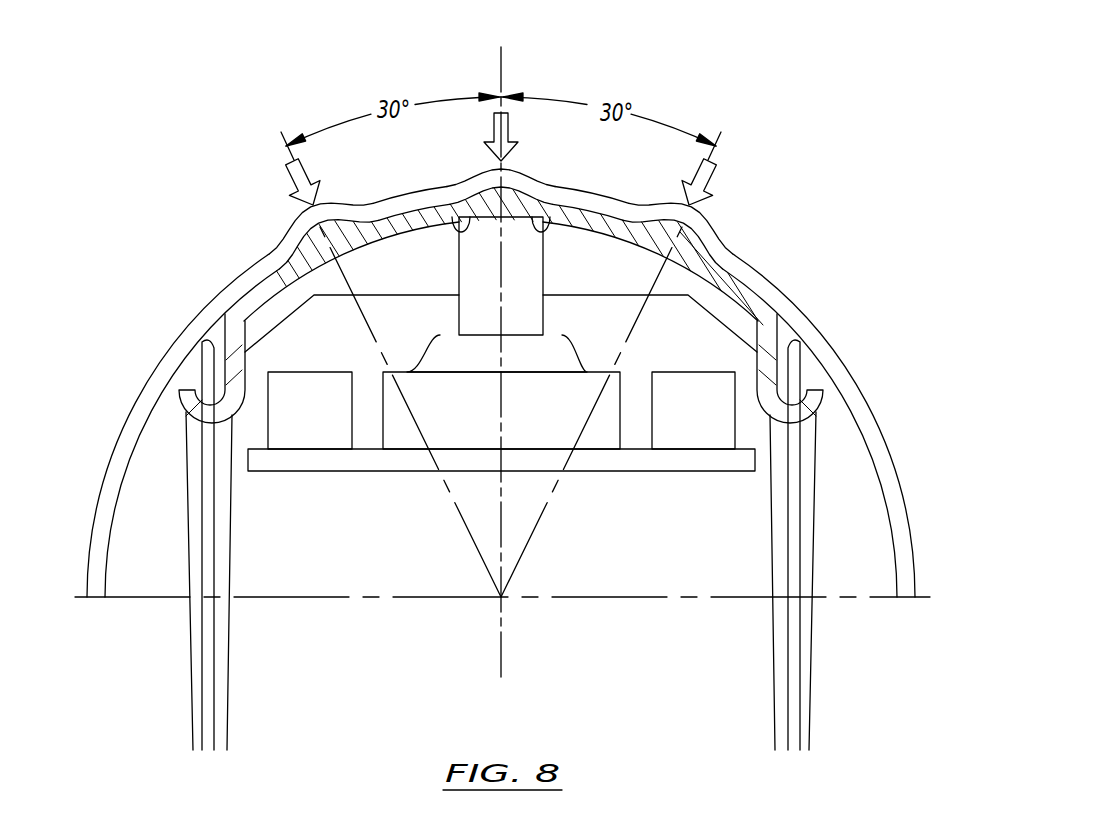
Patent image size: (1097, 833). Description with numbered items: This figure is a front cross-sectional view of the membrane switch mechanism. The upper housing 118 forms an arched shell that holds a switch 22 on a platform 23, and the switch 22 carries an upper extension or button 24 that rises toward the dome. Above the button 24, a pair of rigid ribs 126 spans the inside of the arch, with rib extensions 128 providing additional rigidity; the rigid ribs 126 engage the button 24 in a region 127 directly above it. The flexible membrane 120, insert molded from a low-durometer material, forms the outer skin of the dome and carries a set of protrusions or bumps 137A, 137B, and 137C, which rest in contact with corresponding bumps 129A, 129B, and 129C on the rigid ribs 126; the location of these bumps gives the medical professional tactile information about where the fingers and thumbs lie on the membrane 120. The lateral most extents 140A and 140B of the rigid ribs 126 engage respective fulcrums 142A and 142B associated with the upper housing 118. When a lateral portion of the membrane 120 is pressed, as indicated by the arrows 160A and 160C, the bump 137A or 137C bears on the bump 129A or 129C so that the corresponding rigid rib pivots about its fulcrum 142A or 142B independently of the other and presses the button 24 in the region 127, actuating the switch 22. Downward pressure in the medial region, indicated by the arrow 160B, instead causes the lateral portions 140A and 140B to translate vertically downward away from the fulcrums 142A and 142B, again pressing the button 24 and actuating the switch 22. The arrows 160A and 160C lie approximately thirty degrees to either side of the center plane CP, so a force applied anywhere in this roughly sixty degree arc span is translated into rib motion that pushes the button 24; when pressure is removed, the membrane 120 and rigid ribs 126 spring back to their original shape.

The center plane CP is at (504, 66).
The switch 22 is at (458, 432).
The platform 23 is at (627, 460).
The button 24 is at (475, 273).
The upper housing 118 is at (905, 552).
The membrane 120 is at (586, 202).
The rigid ribs 126 is at (735, 290).
The region 127 is at (460, 233).
The rib extensions 128 is at (368, 280).
The bump 129A is at (322, 247).
The bump 129B is at (508, 203).
The bump 129C is at (683, 242).
The bump 137A is at (298, 221).
The bump 137B is at (517, 178).
The bump 137C is at (706, 218).
The lateral most extent 140A is at (190, 418).
The lateral most extent 140B is at (812, 428).
The fulcrum 142A is at (212, 393).
The fulcrum 142B is at (795, 388).
The arrow 160A is at (291, 185).
The arrow 160B is at (494, 132).
The arrow 160C is at (710, 184).